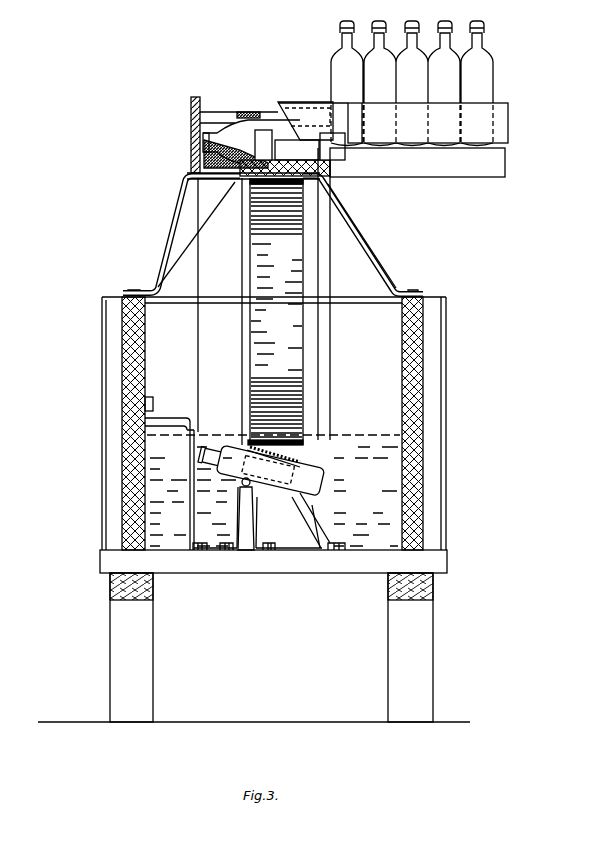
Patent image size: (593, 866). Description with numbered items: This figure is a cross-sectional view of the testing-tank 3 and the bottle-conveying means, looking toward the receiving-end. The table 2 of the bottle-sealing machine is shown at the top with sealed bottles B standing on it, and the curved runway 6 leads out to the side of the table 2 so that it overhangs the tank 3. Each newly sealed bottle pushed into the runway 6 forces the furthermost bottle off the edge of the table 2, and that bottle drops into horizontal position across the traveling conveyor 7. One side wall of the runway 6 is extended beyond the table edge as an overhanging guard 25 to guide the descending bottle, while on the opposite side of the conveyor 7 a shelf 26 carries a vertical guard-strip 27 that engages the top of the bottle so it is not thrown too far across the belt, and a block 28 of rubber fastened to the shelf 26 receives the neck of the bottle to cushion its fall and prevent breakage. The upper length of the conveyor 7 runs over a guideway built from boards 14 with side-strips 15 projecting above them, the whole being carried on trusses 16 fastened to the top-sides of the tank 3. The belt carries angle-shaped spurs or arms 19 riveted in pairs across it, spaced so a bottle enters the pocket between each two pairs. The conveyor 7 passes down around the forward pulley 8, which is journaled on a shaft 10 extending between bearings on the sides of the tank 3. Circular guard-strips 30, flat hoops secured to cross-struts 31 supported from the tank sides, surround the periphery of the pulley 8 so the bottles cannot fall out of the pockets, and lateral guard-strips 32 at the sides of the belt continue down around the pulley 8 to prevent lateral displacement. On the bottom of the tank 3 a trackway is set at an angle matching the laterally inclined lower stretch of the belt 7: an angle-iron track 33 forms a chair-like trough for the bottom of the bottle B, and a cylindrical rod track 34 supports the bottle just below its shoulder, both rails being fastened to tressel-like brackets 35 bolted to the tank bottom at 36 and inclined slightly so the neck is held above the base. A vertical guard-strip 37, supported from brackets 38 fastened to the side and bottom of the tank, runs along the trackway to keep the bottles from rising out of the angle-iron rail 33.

The table 2 is at (417, 162).
The testing-tank 3 is at (273, 435).
The curved chute or runway 6 is at (497, 112).
The traveling belt or conveyor 7 is at (283, 148).
The forward pulley 8 is at (275, 311).
The shaft 10 is at (188, 300).
The boards 14 is at (322, 178).
The side-strips 15 is at (222, 179).
The trusses 16 is at (355, 242).
The spurs or arms 19 is at (255, 140).
The overhanging guard 25 is at (303, 104).
The shelf 26 is at (188, 184).
The vertical guard-strip 27 is at (191, 130).
The block of rubber 28 is at (204, 157).
The circular guard-strips 30 is at (243, 262).
The cross-struts 31 is at (283, 112).
The lateral guard-strips 32 is at (200, 283).
The track 33 is at (328, 497).
The track 34 is at (240, 494).
The tressel-like brackets 35 is at (289, 522).
The bolting point 36 is at (226, 543).
The vertical guard-strip 37 is at (216, 510).
The brackets 38 is at (172, 418).
The bottle B is at (228, 130).
The bottle cap C is at (486, 24).